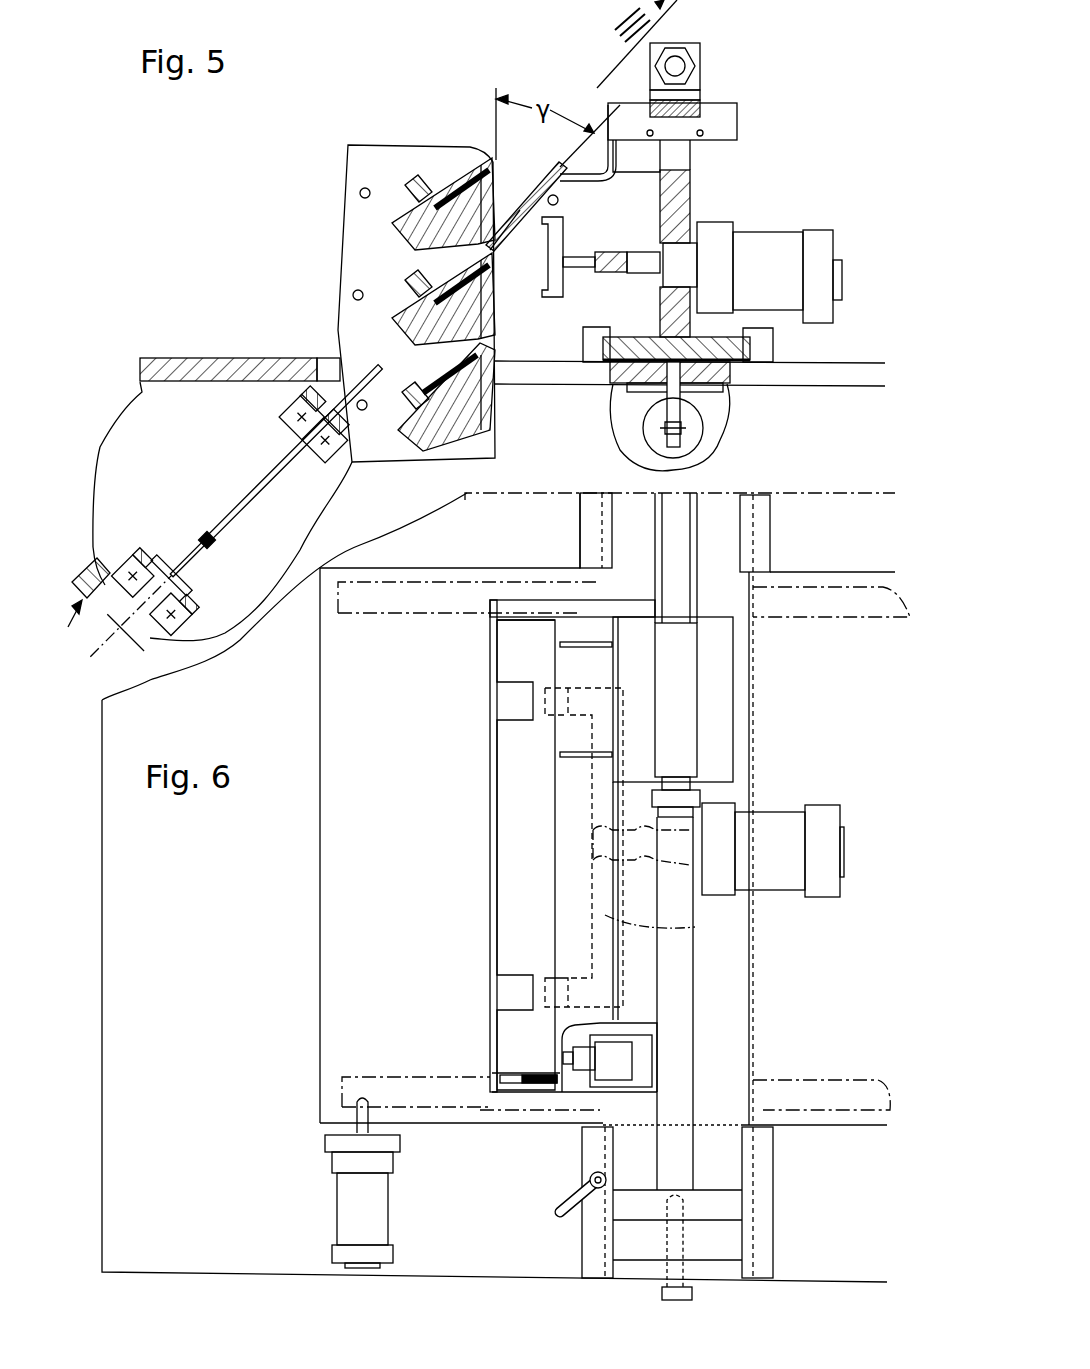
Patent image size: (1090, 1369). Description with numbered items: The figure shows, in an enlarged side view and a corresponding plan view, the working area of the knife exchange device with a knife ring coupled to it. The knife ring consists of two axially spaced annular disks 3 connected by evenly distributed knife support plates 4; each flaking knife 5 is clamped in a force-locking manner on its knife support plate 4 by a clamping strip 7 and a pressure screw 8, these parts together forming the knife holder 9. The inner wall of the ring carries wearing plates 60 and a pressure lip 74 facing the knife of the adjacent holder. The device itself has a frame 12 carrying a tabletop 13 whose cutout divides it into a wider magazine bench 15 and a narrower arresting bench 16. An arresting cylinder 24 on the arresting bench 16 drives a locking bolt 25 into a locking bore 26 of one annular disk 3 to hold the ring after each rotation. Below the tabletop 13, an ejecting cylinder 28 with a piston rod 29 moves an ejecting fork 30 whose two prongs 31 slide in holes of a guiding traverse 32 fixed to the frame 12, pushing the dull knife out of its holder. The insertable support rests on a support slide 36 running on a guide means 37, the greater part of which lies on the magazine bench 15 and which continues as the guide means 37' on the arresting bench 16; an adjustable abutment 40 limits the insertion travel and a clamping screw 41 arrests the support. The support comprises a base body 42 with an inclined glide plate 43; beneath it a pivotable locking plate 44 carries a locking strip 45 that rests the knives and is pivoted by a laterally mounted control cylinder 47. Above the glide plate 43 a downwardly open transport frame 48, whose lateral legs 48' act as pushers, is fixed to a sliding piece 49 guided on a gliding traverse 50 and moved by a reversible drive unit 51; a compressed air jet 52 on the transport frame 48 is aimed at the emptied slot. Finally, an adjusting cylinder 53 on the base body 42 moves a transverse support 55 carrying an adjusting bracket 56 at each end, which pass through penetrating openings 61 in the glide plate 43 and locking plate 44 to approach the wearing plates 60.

In FIG. 5, the annular disks 3 is at (383, 165).
In FIG. 6, the annular disks 3 is at (400, 605).
In FIG. 5, the knife support plate 4 is at (410, 250).
In FIG. 5, the flaking knives 5 is at (494, 150).
In FIG. 5, the clamping strip 7 is at (448, 185).
In FIG. 5, the pressure screw 8 is at (400, 420).
In FIG. 5, the force-locking knife holder 9 is at (362, 328).
In FIG. 5, the frame 12 is at (280, 541).
In FIG. 5, the tabletop 13 is at (172, 356).
In FIG. 6, the tabletop 13 is at (231, 905).
In FIG. 6, the magazine bench 15 is at (842, 558).
In FIG. 6, the arresting bench 16 is at (465, 1227).
In FIG. 6, the arresting cylinder 24 is at (352, 1202).
In FIG. 6, the locking bolt 25 is at (360, 1113).
In FIG. 5, the locking bore 26 is at (354, 293).
In FIG. 5, the ejecting cylinder 28 is at (110, 580).
In FIG. 5, the piston rod 29 is at (190, 547).
In FIG. 5, the ejecting fork 30 is at (207, 534).
In FIG. 5, the prongs 31 is at (273, 470).
In FIG. 5, the guiding traverse 32 is at (337, 447).
In FIG. 5, the support slide 36 is at (727, 362).
In FIG. 5, the guide means 37 is at (711, 345).
In FIG. 6, the guide means continuation 37' is at (794, 1202).
In FIG. 6, the adjustable abutment 40 is at (680, 1195).
In FIG. 6, the clamping screw 41 is at (590, 1182).
In FIG. 5, the base body 42 is at (685, 195).
In FIG. 5, the glide plate 43 is at (663, 222).
In FIG. 6, the glide plate 43 is at (541, 877).
In FIG. 5, the locking plate 44 is at (552, 205).
In FIG. 6, the locking strip 45 is at (490, 794).
In FIG. 6, the control cylinder 47 is at (626, 1076).
In FIG. 6, the transport frame 48 is at (568, 824).
In FIG. 6, the lateral legs 48' is at (502, 847).
In FIG. 5, the sliding piece 49 is at (730, 132).
In FIG. 6, the sliding piece 49 is at (720, 712).
In FIG. 5, the gliding traverse 50 is at (685, 156).
In FIG. 5, the reversible drive unit 51 is at (690, 67).
In FIG. 6, the compressed air jet 52 is at (530, 1073).
In FIG. 5, the adjusting cylinder 53 is at (760, 258).
In FIG. 6, the adjusting cylinder 53 is at (780, 878).
In FIG. 6, the transverse support 55 is at (693, 927).
In FIG. 5, the adjusting bracket 56 is at (552, 297).
In FIG. 6, the adjusting bracket 56 is at (526, 947).
In FIG. 5, the wearing plates 60 is at (487, 300).
In FIG. 6, the penetrating openings 61 is at (515, 702).
In FIG. 5, the pressure lip 74 is at (680, 483).